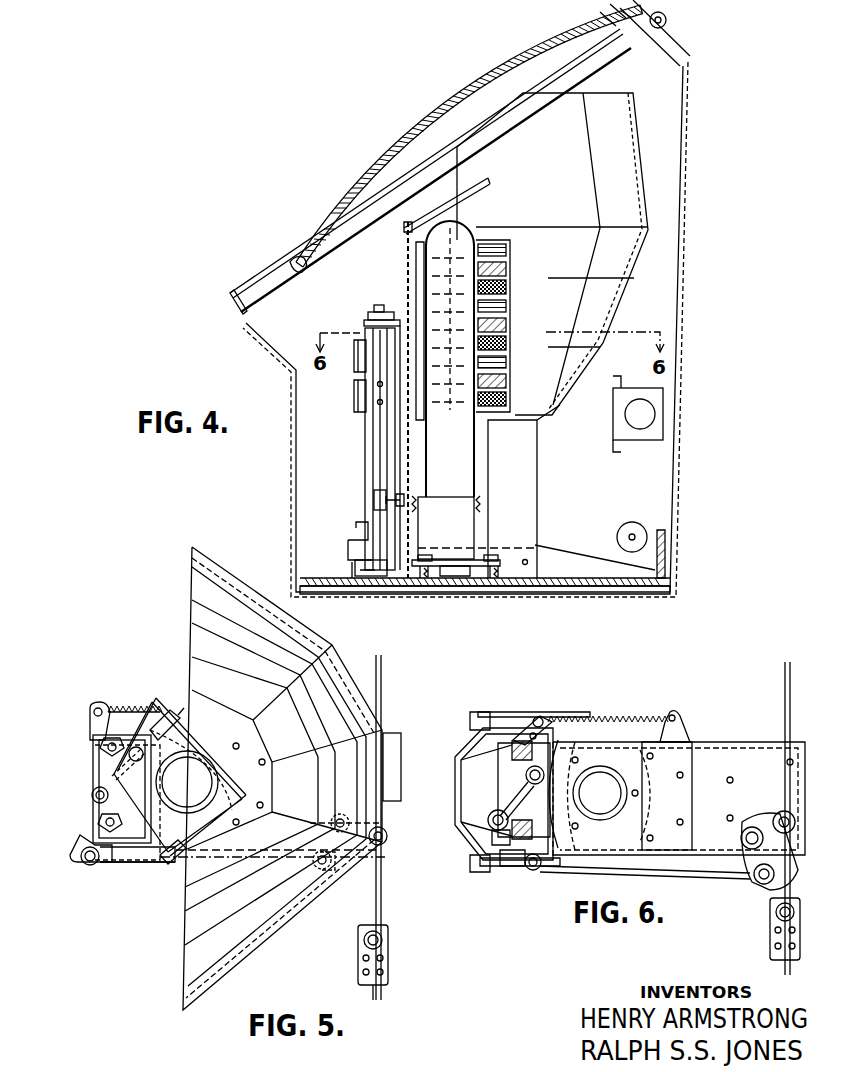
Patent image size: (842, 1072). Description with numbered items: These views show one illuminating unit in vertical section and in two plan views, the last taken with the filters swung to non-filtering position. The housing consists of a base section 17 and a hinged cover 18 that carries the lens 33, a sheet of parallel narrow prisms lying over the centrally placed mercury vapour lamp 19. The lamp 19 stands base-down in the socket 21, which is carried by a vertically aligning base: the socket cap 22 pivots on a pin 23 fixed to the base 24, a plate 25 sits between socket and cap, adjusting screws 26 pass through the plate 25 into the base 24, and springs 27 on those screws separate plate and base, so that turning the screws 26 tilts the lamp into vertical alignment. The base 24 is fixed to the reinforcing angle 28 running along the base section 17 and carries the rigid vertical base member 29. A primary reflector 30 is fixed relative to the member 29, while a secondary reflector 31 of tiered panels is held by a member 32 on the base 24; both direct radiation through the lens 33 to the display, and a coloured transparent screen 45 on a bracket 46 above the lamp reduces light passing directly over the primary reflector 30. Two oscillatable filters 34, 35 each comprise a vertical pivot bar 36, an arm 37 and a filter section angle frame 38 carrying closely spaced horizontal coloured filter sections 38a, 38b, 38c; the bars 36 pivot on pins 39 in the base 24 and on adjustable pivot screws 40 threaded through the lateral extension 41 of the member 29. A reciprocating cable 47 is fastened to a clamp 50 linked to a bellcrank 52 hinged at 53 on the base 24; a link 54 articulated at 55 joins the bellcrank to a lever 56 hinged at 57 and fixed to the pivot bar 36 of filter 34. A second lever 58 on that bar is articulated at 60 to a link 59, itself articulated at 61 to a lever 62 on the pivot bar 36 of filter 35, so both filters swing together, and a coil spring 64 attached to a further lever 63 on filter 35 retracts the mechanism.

In FIG. 4, the base section 17 is at (678, 312).
In FIG. 4, the cover 18 is at (256, 273).
In FIG. 4, the mercury vapour lamp 19 is at (450, 359).
In FIG. 5, the mercury vapour lamp 19 is at (191, 771).
In FIG. 6, the mercury vapour lamp 19 is at (609, 796).
In FIG. 4, the socket 21 is at (446, 527).
In FIG. 4, the socket cap 22 is at (460, 566).
In FIG. 4, the pin 23 is at (452, 578).
In FIG. 4, the base 24 is at (556, 594).
In FIG. 5, the base 24 is at (401, 768).
In FIG. 6, the base 24 is at (679, 798).
In FIG. 4, the plate 25 is at (428, 580).
In FIG. 4, the adjusting screws 26 is at (490, 560).
In FIG. 4, the springs 27 is at (498, 576).
In FIG. 4, the reinforcing angle 28 is at (606, 594).
In FIG. 4, the vertical base member 29 is at (395, 462).
In FIG. 5, the vertical base member 29 is at (208, 862).
In FIG. 6, the vertical base member 29 is at (555, 852).
In FIG. 4, the primary reflector 30 is at (416, 252).
In FIG. 5, the primary reflector 30 is at (222, 806).
In FIG. 6, the primary reflector 30 is at (578, 754).
In FIG. 4, the secondary reflector 31 is at (552, 254).
In FIG. 5, the secondary reflector 31 is at (282, 778).
In FIG. 4, the member 32 is at (524, 491).
In FIG. 6, the member 32 is at (667, 796).
In FIG. 4, the lens 33 is at (420, 126).
In FIG. 5, the filter 34 is at (188, 828).
In FIG. 6, the filter 34 is at (518, 866).
In FIG. 5, the filter 35 is at (196, 742).
In FIG. 6, the filter 35 is at (528, 712).
In FIG. 4, the pivot bar 36 is at (373, 433).
In FIG. 5, the pivot bar 36 is at (96, 738).
In FIG. 6, the pivot bar 36 is at (500, 750).
In FIG. 4, the arm 37 is at (356, 356).
In FIG. 5, the arm 37 is at (93, 773).
In FIG. 6, the arm 37 is at (458, 793).
In FIG. 5, the filter section angle frame 38 is at (168, 712).
In FIG. 6, the filter section angle frame 38 is at (478, 712).
In FIG. 4, the filter section 38a is at (506, 252).
In FIG. 4, the filter section 38b is at (506, 327).
In FIG. 4, the filter section 38c is at (506, 290).
In FIG. 4, the pins 39 is at (368, 578).
In FIG. 4, the adjustable pivot screws 40 is at (374, 312).
In FIG. 4, the lateral extension 41 is at (366, 322).
In FIG. 4, the transparent filter or screen 45 is at (478, 190).
In FIG. 4, the bracket 46 is at (406, 276).
In FIG. 4, the cable or wire 47 is at (617, 539).
In FIG. 5, the cable or wire 47 is at (381, 674).
In FIG. 6, the cable or wire 47 is at (785, 686).
In FIG. 5, the clamp 50 is at (388, 953).
In FIG. 6, the clamp 50 is at (770, 936).
In FIG. 5, the bellcrank 52 is at (384, 845).
In FIG. 6, the bellcrank 52 is at (778, 812).
In FIG. 5, the pivot 53 is at (330, 826).
In FIG. 6, the pivot 53 is at (741, 836).
In FIG. 5, the link 54 is at (160, 862).
In FIG. 6, the link 54 is at (676, 876).
In FIG. 5, the articulation 55 is at (312, 866).
In FIG. 6, the articulation 55 is at (758, 882).
In FIG. 5, the lever 56 is at (84, 847).
In FIG. 6, the lever 56 is at (515, 866).
In FIG. 5, the pivot 57 is at (90, 866).
In FIG. 6, the pivot 57 is at (538, 870).
In FIG. 5, the second lever 58 is at (98, 822).
In FIG. 6, the second lever 58 is at (492, 840).
In FIG. 5, the link 59 is at (129, 775).
In FIG. 6, the link 59 is at (524, 801).
In FIG. 5, the articulation 60 is at (92, 796).
In FIG. 6, the articulation 60 is at (490, 826).
In FIG. 5, the articulation 61 is at (186, 703).
In FIG. 6, the articulation 61 is at (540, 720).
In FIG. 4, the lever 62 is at (376, 498).
In FIG. 5, the lever 62 is at (100, 748).
In FIG. 6, the lever 62 is at (526, 779).
In FIG. 4, the second lever 63 is at (356, 545).
In FIG. 5, the second lever 63 is at (97, 706).
In FIG. 6, the second lever 63 is at (520, 730).
In FIG. 5, the retractable coil spring 64 is at (132, 708).
In FIG. 6, the retractable coil spring 64 is at (628, 720).